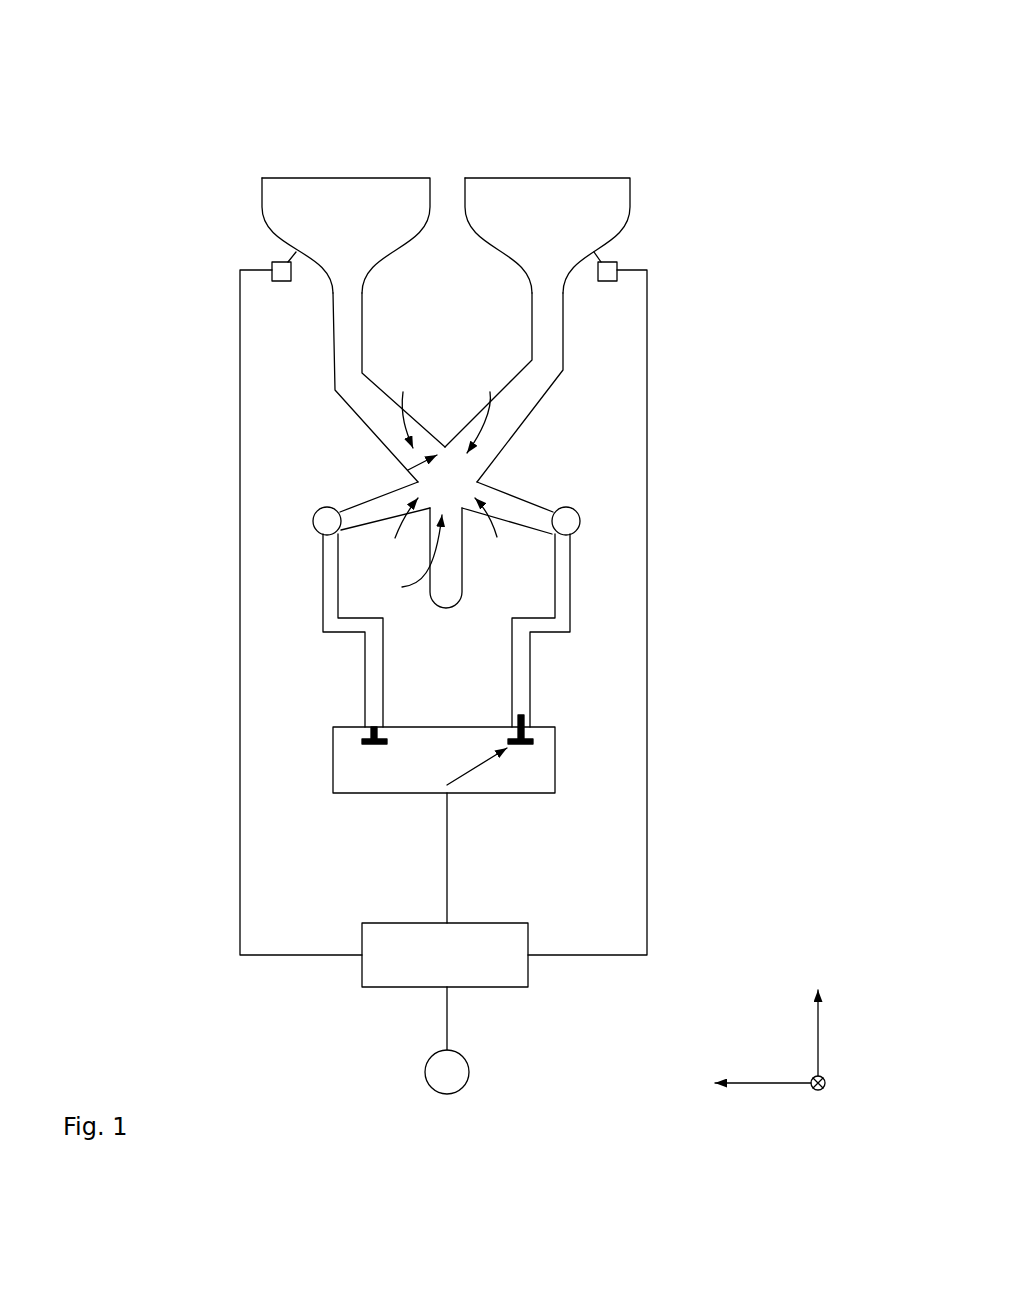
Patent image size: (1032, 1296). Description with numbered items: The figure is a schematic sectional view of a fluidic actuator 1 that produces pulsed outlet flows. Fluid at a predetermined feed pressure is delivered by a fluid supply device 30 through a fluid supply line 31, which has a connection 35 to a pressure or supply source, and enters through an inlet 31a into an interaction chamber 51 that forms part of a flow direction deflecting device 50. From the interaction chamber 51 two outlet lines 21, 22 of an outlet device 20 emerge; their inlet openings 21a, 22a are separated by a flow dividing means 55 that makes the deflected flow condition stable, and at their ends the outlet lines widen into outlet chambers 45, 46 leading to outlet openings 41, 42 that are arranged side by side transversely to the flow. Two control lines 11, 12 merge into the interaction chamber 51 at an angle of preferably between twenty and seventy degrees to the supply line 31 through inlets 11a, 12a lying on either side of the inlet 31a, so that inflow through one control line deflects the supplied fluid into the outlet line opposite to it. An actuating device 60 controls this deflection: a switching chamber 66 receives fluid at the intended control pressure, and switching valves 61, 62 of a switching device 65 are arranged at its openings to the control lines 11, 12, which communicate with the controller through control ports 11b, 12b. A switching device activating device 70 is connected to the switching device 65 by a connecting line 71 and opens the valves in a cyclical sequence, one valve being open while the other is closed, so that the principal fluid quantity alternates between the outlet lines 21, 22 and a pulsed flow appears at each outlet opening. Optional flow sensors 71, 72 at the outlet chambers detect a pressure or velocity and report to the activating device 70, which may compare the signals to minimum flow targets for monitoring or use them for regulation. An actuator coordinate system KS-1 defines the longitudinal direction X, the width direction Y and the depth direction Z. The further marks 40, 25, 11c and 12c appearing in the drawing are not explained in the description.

The fluidic actuator 1 is at (748, 80).
The outlet device 20 is at (627, 337).
The reservoir arrangement 40 is at (612, 85).
The outlet opening 41 is at (287, 157).
The outlet opening 42 is at (598, 155).
The outlet chamber 45 is at (363, 200).
The outlet chamber 46 is at (548, 190).
The outlet line 21 is at (352, 390).
The outlet line 22 is at (543, 343).
The inlet opening 21a is at (401, 407).
The inlet opening 22a is at (490, 408).
The connecting line 71 is at (273, 263).
The flow sensor 72 is at (618, 268).
The flow direction deflecting device 50 is at (535, 448).
The flow dividing means 55 is at (408, 470).
The junction 25 is at (448, 460).
The interaction chamber 51 is at (478, 481).
The control line 11 is at (363, 502).
The inlet 11a is at (386, 532).
The control port 11b is at (325, 518).
The first electrode lead 11c is at (330, 608).
The control line 12 is at (525, 507).
The inlet 12a is at (505, 527).
The control port 12b is at (563, 523).
The second electrode lead 12c is at (560, 615).
The fluid supply device 30 is at (542, 593).
The fluid supply line 31 is at (453, 552).
The inlet 31a is at (396, 558).
The connection 35 is at (448, 600).
The actuating device 60 is at (530, 792).
The switching valve 61 is at (348, 740).
The switching valve 62 is at (537, 752).
The switching device 65 is at (480, 778).
The switching chamber 66 is at (373, 787).
The switching device activating device 70 is at (445, 1008).
The actuator coordinate system KS-1 is at (748, 1015).